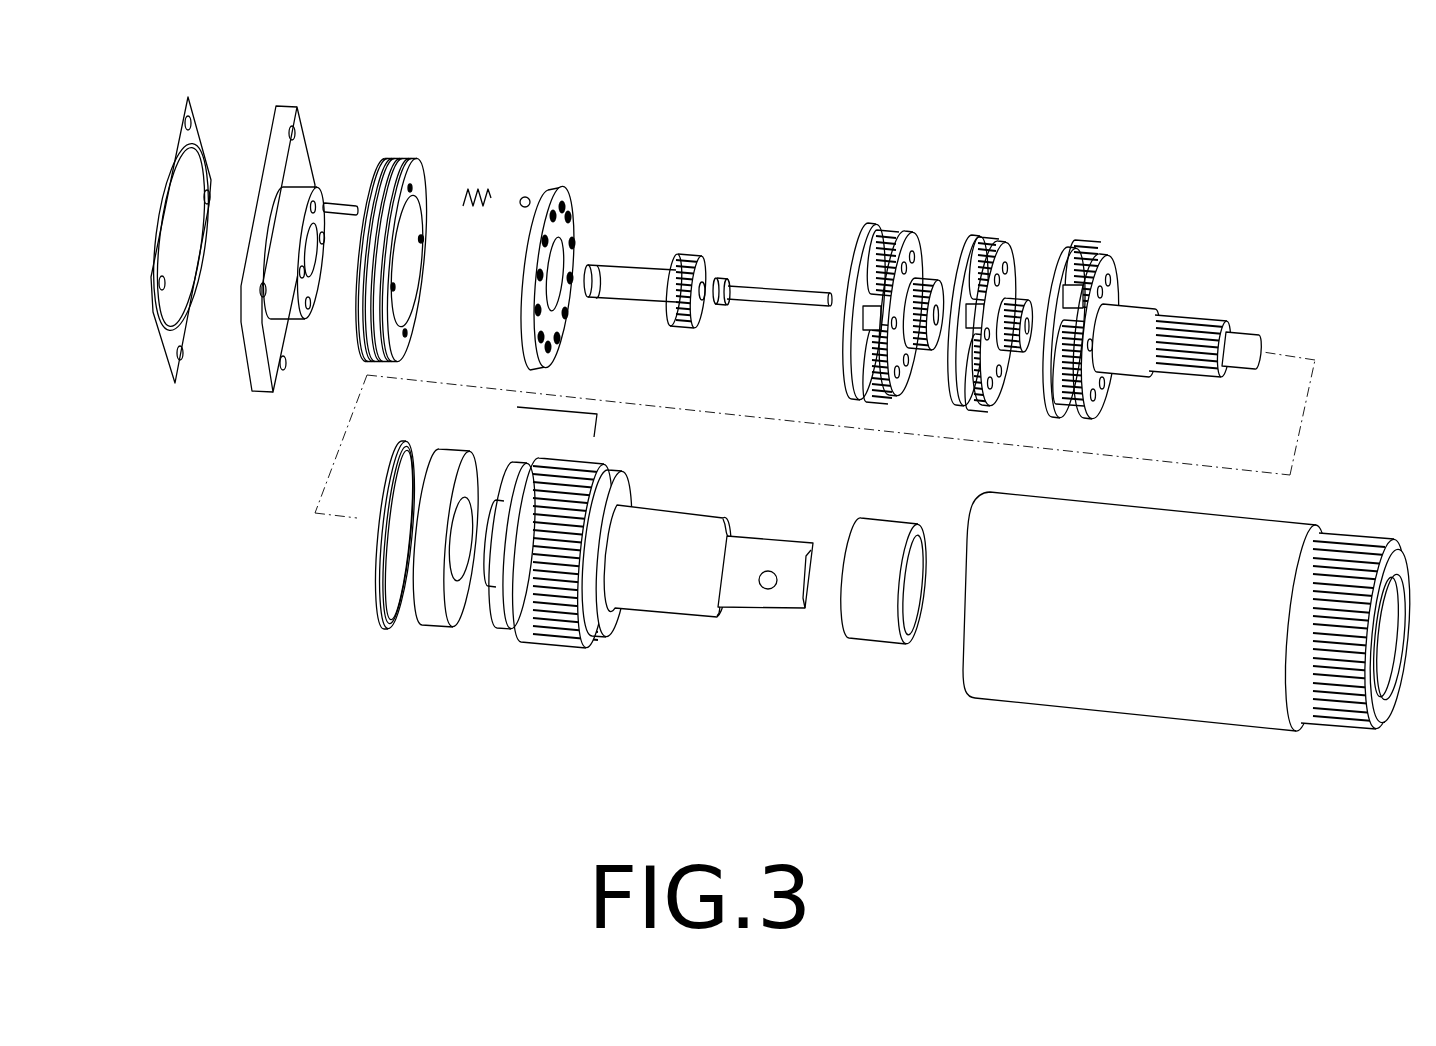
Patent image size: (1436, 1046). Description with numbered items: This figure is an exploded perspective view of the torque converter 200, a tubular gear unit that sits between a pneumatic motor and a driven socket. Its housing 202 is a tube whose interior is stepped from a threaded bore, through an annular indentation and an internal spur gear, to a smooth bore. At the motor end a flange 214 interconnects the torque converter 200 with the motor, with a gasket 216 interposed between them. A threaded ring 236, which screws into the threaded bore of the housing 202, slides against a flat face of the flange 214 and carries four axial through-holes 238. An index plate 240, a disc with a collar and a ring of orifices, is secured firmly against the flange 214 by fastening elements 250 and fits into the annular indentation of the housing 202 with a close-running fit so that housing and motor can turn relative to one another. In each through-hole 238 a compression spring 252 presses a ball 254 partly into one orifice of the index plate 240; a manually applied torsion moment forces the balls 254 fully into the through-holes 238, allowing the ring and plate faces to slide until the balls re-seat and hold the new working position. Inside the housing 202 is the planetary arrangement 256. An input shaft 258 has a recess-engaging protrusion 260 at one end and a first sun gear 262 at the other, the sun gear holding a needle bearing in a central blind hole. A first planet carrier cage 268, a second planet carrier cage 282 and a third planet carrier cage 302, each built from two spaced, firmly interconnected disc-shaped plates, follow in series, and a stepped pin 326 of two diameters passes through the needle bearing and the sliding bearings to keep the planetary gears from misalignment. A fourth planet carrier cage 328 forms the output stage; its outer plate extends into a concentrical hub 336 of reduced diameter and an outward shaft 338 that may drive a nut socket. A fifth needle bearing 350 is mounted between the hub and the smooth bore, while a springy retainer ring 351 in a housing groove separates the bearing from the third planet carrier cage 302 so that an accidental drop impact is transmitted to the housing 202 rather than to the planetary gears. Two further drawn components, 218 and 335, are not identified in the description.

The torque converter 200 is at (290, 630).
The housing 202 is at (1102, 638).
The flange 214 is at (295, 162).
The gasket 216 is at (192, 140).
The end plate body 218 is at (280, 378).
The threaded ring 236 is at (398, 158).
The axial through-holes 238 is at (422, 238).
The index plate 240 is at (570, 222).
The fastening elements 250 is at (344, 214).
The compression spring 252 is at (473, 208).
The ball 254 is at (530, 198).
The planetary arrangement 256 is at (722, 145).
The input shaft 258 is at (638, 288).
The recess-engaging protrusion 260 is at (592, 285).
The first sun gear 262 is at (682, 327).
The first planet carrier cage 268 is at (895, 282).
The second planet carrier cage 282 is at (992, 289).
The third planet carrier cage 302 is at (1152, 298).
The stepped pin 326 is at (765, 300).
The fourth planet carrier cage 328 is at (560, 600).
The bushing 335 is at (412, 590).
The concentrical hub 336 is at (668, 588).
The outward shaft 338 is at (783, 597).
The fifth needle bearing 350 is at (870, 633).
The springy retainer ring 351 is at (368, 603).